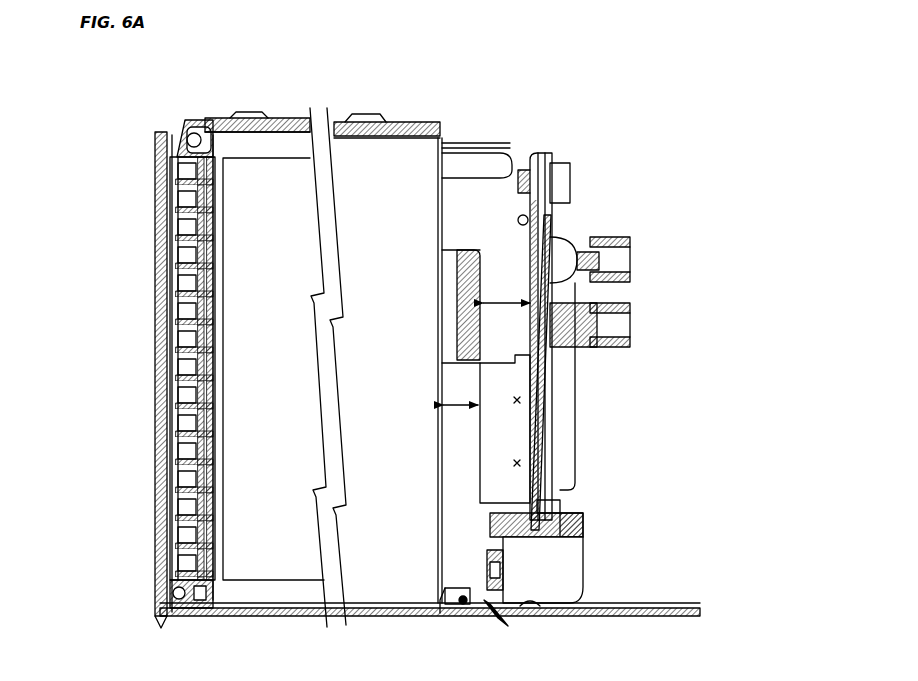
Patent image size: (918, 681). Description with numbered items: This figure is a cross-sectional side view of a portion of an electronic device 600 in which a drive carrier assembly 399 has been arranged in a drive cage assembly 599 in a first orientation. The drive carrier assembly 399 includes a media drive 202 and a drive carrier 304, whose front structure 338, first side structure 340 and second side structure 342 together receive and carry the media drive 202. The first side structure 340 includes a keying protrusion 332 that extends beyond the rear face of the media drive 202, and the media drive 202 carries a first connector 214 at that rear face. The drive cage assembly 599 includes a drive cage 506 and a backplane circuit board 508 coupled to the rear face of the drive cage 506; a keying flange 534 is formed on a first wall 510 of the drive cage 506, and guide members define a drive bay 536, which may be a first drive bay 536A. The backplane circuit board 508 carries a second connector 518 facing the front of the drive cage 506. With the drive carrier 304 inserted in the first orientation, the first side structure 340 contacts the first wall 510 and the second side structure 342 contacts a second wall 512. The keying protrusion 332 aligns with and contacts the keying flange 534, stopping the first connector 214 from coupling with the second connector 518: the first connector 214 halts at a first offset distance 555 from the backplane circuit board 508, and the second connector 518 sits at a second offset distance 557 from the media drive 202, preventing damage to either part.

The electronic device 600 is at (645, 38).
The drive carrier 304 is at (185, 128).
The second wall 512 is at (215, 118).
The drive cage 506 is at (303, 108).
The second side structure 342 is at (398, 128).
The drive bay 536 is at (544, 206).
The first drive bay 536A is at (450, 202).
The first connector 214 is at (448, 252).
The front structure 338 is at (200, 250).
The media drive 202 is at (255, 310).
The drive carrier assembly 399 is at (175, 487).
The first side structure 340 is at (225, 605).
The first wall 510 is at (305, 622).
The keying protrusion 332 is at (455, 620).
The keying flange 534 is at (467, 587).
The drive cage assembly 599 is at (592, 588).
The second connector 518 is at (512, 470).
The second offset distance 557 is at (460, 407).
The first offset distance 555 is at (493, 303).
The backplane circuit board 508 is at (560, 390).